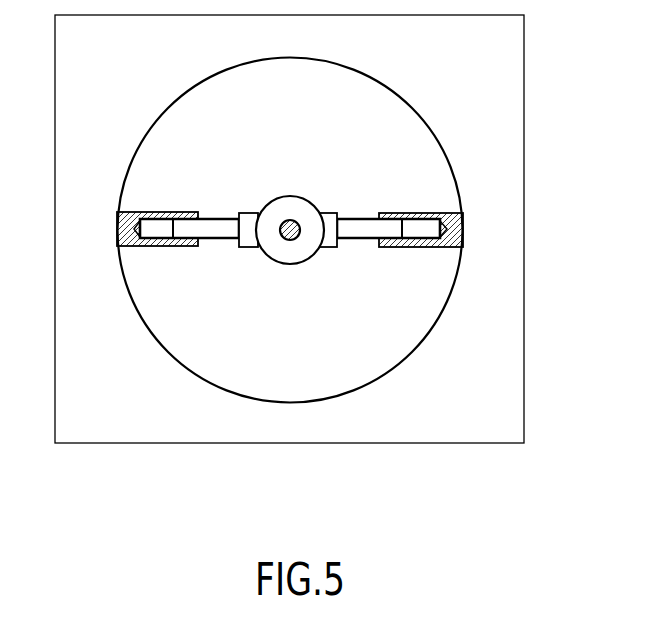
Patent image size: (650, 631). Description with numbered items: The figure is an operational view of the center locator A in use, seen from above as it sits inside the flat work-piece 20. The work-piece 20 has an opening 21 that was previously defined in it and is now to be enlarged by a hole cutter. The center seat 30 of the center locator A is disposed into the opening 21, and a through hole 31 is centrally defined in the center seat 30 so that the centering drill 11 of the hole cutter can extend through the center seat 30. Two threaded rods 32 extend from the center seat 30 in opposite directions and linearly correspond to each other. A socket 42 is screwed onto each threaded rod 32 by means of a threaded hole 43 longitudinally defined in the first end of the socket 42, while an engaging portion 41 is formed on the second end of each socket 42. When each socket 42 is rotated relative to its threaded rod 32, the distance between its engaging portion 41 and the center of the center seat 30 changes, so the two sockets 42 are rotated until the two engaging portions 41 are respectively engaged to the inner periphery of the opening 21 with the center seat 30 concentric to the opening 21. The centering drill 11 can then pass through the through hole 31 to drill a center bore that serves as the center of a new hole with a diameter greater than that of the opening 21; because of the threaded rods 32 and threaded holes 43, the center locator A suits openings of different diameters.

The flat work-piece 20 is at (493, 165).
The opening 21 is at (442, 148).
The center seat 30 is at (262, 253).
The through hole 31 is at (290, 240).
The centering drill 11 is at (290, 225).
The threaded rod 32 is at (222, 219).
The threaded hole 43 is at (402, 222).
The engaging portion 41 is at (117, 228).
The socket 42 is at (145, 247).
The center locator A is at (250, 183).